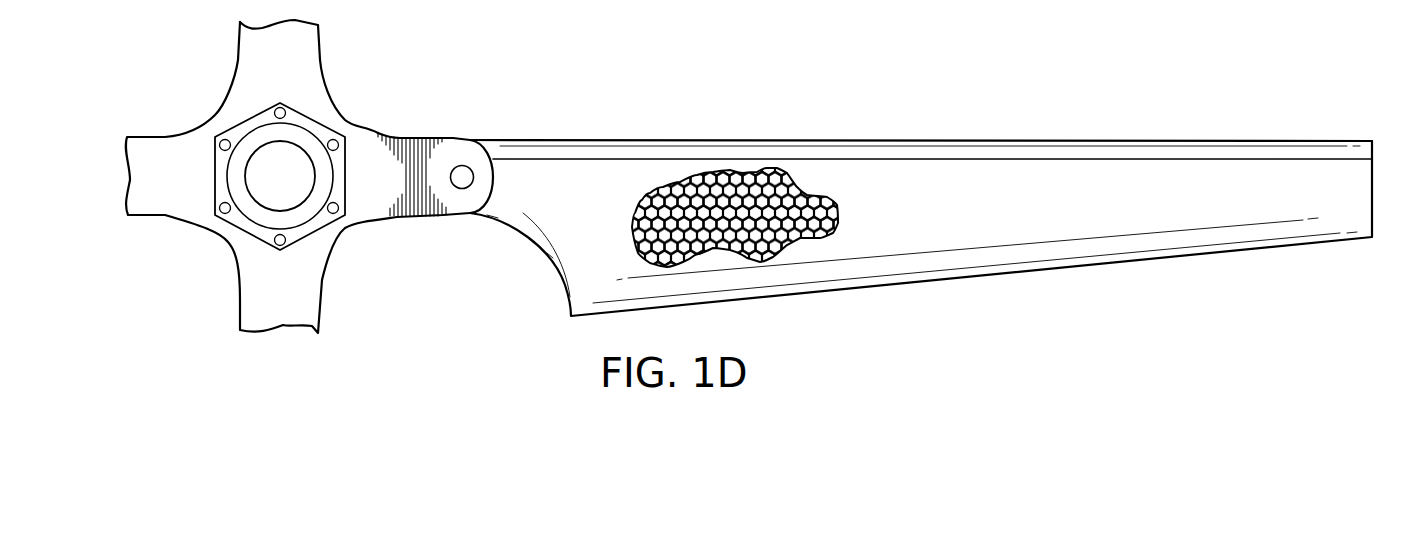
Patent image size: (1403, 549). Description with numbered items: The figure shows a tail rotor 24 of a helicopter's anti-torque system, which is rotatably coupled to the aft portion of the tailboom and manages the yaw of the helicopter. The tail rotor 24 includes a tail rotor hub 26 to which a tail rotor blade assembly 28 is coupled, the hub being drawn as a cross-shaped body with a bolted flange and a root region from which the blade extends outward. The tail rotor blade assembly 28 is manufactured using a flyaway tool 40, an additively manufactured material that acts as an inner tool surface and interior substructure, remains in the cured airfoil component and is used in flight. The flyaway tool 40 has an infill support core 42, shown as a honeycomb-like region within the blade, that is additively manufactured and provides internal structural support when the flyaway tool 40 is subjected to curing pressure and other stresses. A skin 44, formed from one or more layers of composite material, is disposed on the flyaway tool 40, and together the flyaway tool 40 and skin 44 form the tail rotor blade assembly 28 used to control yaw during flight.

The tail rotor 24 is at (322, 43).
The tail rotor hub 26 is at (363, 123).
The tail rotor blade assembly 28 is at (1227, 253).
The flyaway tool 40 is at (834, 217).
The infill support core 42 is at (639, 218).
The skin 44 is at (1112, 176).